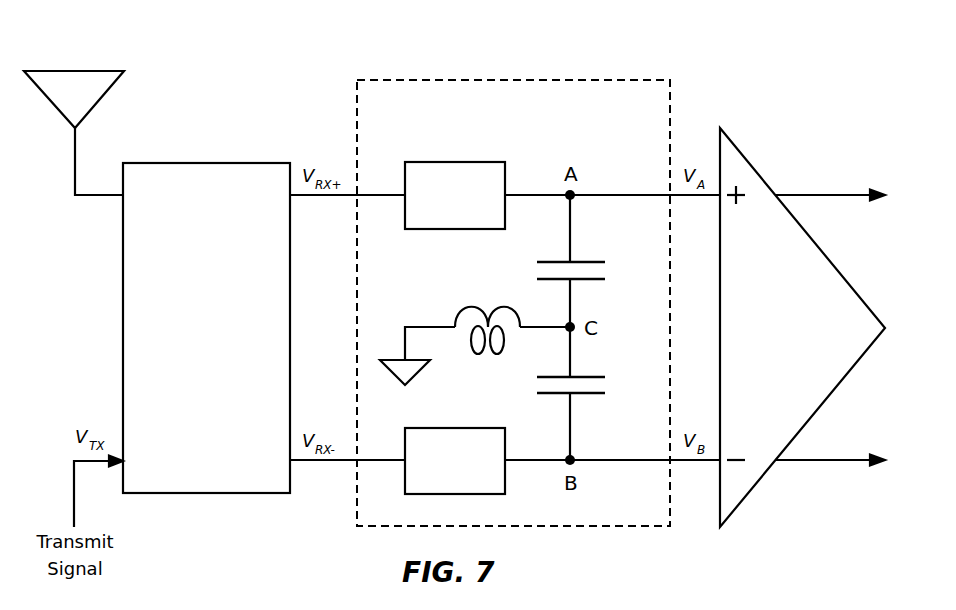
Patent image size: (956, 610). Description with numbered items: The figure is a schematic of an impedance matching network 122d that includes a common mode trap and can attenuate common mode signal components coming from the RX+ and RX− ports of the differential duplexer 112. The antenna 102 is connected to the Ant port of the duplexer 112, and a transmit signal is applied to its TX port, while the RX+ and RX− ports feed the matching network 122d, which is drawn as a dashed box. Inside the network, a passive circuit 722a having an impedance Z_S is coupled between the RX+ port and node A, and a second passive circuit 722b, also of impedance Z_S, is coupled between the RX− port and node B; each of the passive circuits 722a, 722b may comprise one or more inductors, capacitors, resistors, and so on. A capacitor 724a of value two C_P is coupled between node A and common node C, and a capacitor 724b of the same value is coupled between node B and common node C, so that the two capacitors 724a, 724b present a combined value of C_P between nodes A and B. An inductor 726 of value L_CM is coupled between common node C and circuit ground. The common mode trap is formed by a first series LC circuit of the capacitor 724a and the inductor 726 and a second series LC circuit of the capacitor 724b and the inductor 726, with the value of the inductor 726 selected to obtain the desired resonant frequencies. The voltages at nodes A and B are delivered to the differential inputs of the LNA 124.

The antenna 102 is at (72, 69).
The differential duplexer 112 is at (202, 163).
The impedance matching network 122d is at (507, 80).
The passive circuit 722a is at (403, 221).
The passive circuit 722b is at (405, 440).
The capacitor 724a is at (551, 262).
The capacitor 724b is at (553, 394).
The inductor 726 is at (490, 302).
The LNA 124 is at (843, 251).